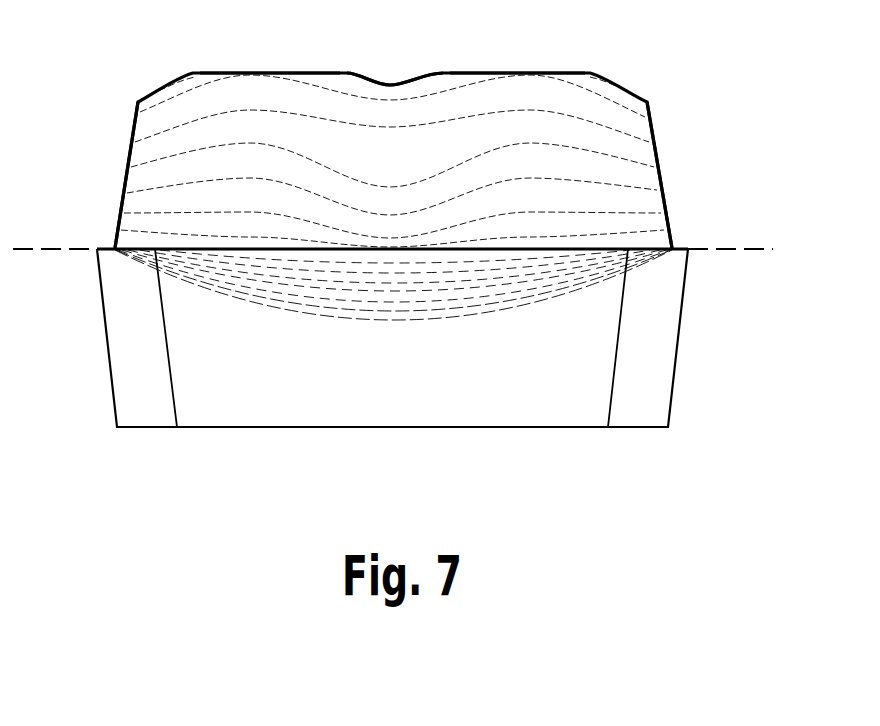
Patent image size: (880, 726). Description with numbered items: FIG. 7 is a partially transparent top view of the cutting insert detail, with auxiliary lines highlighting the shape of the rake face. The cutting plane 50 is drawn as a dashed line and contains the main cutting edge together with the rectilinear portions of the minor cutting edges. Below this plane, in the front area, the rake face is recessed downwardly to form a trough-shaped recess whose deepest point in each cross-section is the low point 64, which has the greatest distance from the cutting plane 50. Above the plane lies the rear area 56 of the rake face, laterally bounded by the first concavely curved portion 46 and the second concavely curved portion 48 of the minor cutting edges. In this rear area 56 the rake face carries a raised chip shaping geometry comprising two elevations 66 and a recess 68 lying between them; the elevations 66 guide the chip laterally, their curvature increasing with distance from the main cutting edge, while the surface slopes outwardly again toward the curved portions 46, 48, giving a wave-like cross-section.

The first concavely curved portion 46 is at (654, 152).
The second concavely curved portion 48 is at (133, 153).
The cutting plane 50 is at (762, 251).
The rear area 56 is at (410, 172).
The low point 64 is at (395, 321).
The elevations 66 is at (250, 108).
The recess 68 is at (390, 125).